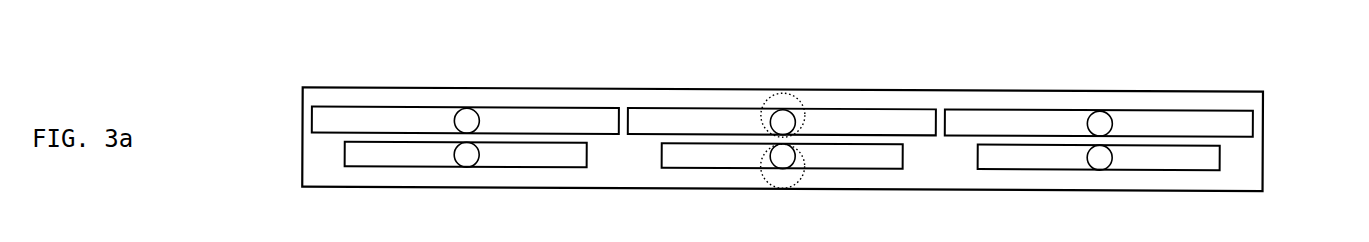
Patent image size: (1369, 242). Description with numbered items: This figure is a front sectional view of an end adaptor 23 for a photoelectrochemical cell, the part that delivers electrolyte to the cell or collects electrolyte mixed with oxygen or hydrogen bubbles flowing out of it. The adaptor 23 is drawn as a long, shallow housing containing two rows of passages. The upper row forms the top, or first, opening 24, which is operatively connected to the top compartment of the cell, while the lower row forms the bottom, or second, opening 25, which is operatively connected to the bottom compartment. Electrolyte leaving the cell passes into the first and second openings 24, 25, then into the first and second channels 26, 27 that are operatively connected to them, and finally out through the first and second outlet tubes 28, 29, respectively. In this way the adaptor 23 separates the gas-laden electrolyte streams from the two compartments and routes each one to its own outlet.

The end adaptor 23 is at (1192, 88).
The first opening 24 is at (1220, 127).
The second opening 25 is at (1183, 160).
The first channel 26 is at (1099, 121).
The second channel 27 is at (1100, 158).
The first outlet tube 28 is at (800, 98).
The second outlet tube 29 is at (803, 178).